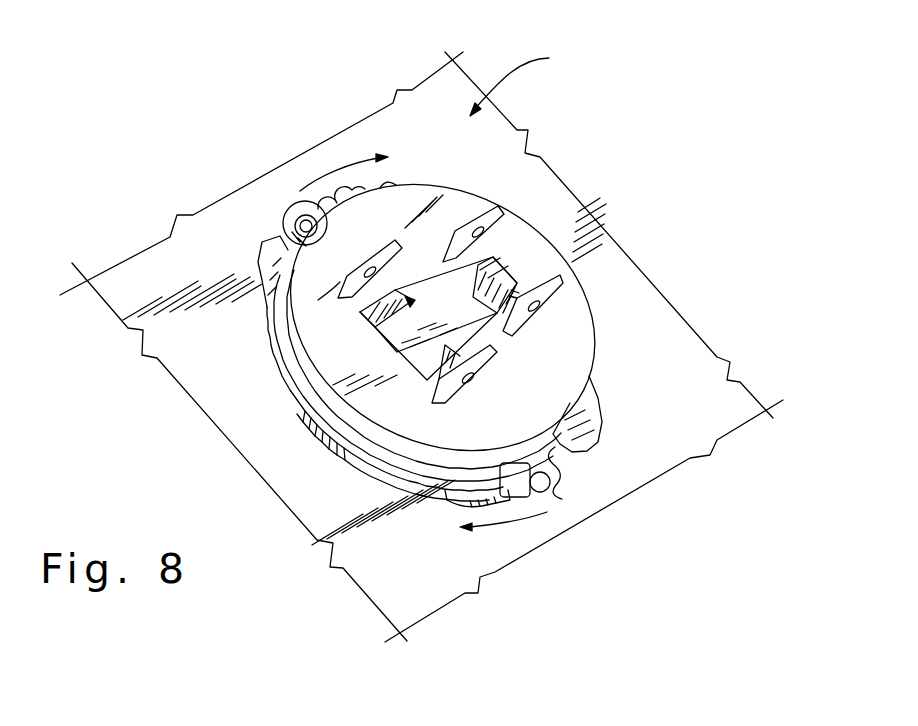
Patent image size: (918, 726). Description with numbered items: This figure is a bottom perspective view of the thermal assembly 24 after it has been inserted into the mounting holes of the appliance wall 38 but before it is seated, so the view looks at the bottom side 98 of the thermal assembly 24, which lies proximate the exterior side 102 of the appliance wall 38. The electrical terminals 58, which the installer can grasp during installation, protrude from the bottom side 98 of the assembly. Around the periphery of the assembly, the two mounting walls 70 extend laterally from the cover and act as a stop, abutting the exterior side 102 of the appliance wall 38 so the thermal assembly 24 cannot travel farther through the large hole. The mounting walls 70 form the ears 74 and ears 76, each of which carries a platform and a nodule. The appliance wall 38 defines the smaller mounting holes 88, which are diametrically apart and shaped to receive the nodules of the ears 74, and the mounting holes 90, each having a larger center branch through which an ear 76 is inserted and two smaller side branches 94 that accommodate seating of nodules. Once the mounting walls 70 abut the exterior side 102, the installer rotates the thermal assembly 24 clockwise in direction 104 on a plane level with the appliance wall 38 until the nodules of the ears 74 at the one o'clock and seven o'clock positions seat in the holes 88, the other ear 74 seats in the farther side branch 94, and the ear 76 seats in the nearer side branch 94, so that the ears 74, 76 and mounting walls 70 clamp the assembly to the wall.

The thermal assembly 24 is at (521, 238).
The appliance wall 38 is at (528, 79).
The electrical terminals 58 is at (340, 282).
The mounting walls 70 is at (303, 406).
The ears 74 is at (273, 256).
The ear 76 is at (550, 492).
The mounting holes 88 is at (392, 185).
The mounting holes 90 is at (276, 203).
The side branch 94 is at (568, 470).
The bottom side 98 is at (550, 386).
The exterior side 102 is at (728, 423).
The direction 104 is at (338, 163).